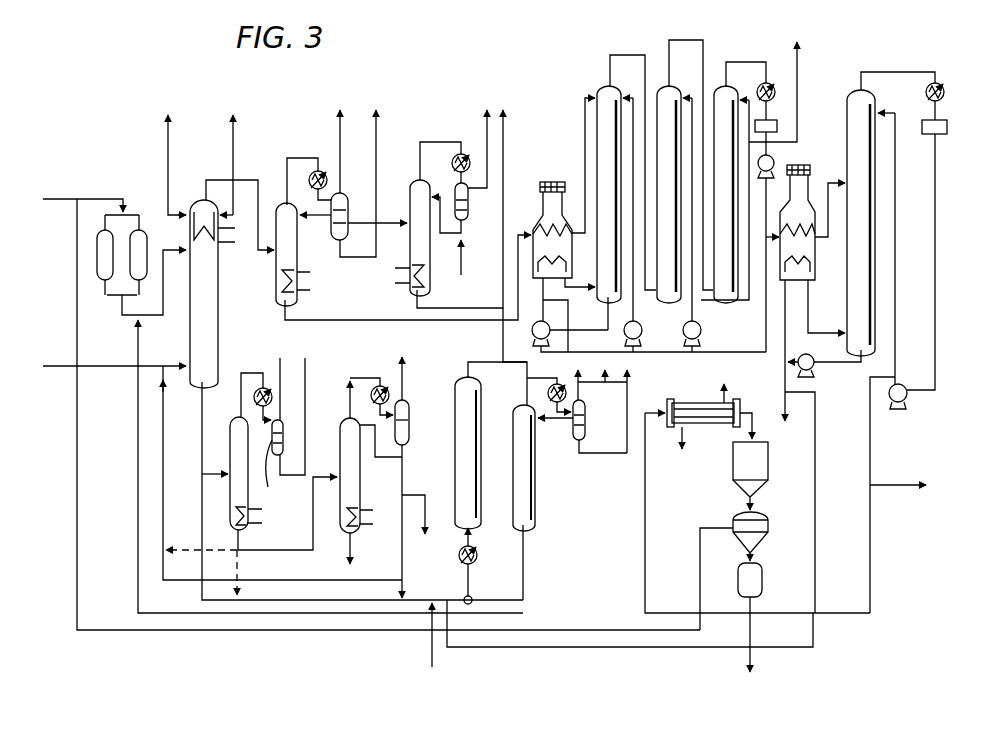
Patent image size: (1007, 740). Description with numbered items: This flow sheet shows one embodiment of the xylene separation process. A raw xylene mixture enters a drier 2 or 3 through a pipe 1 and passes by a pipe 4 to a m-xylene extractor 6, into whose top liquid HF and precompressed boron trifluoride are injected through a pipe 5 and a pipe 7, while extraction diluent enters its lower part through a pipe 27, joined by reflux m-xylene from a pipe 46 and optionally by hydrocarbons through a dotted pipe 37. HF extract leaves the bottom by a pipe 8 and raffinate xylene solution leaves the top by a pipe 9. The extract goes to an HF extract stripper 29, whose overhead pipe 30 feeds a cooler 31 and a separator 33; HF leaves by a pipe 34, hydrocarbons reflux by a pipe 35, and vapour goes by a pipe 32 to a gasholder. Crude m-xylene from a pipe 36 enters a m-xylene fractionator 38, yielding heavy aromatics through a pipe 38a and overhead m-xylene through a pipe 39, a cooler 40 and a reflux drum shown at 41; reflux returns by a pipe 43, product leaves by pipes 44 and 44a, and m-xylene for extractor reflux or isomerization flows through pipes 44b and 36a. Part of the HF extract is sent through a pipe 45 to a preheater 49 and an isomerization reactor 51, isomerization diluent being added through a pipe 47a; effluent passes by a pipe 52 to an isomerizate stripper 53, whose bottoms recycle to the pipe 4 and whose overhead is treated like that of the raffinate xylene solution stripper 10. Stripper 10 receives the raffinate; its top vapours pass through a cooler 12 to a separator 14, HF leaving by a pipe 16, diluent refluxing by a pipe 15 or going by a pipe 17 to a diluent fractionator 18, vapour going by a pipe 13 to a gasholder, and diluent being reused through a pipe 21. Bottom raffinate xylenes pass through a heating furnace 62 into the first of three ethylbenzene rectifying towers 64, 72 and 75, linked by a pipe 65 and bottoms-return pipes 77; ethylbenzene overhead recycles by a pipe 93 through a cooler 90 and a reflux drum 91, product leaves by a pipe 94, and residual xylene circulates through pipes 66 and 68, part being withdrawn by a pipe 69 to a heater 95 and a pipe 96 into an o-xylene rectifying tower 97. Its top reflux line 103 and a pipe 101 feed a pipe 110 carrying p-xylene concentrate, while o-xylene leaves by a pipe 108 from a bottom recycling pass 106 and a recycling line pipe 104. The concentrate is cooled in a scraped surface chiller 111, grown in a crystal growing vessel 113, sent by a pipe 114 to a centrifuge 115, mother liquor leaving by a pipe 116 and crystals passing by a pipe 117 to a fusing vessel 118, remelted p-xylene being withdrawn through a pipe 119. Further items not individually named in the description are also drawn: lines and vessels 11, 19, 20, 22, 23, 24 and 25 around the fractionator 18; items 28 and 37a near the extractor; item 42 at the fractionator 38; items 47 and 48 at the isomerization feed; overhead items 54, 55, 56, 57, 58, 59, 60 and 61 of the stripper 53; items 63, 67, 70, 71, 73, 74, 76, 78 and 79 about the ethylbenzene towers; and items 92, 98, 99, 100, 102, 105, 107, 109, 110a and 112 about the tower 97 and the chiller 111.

The pipe 1 is at (104, 199).
The drier 2 is at (104, 283).
The drier 3 is at (146, 243).
The pipe 4 is at (146, 312).
The pipe 5 is at (167, 150).
The m-xylene extractor 6 is at (218, 290).
The pipe 7 is at (232, 148).
The pipe 8 is at (202, 400).
The raffinate xylene-solution withdrawal pipe 9 is at (258, 178).
The raffinate xylene solution stripper 10 is at (276, 263).
The overhead line 11 is at (288, 165).
The cooler 12 is at (318, 170).
The pipe 13 is at (340, 118).
The separator 14 is at (348, 198).
The pipe 15 is at (316, 218).
The pipe 16 is at (355, 257).
The pipe 17 is at (390, 222).
The diluent fractionator 18 is at (410, 257).
The overhead line 19 is at (440, 142).
The condenser 20 is at (462, 152).
The pipe 21 is at (488, 112).
The separator drum 22 is at (468, 212).
The line 23 is at (504, 158).
The reflux line 24 is at (452, 238).
The line 25 is at (463, 268).
The pipe 27 is at (107, 366).
The line 28 is at (202, 474).
The HF extract stripper 29 is at (230, 428).
The pipe 30 is at (242, 380).
The cooler 31 is at (280, 370).
The pipe 32 is at (305, 366).
The separator 33 is at (283, 430).
The pipe 34 is at (292, 476).
The pipe 35 is at (268, 487).
The pipe 36 is at (250, 548).
The pipe 36a is at (240, 568).
The pipe 37 is at (195, 550).
The line 37a is at (163, 450).
The m-xylene fractionator 38 is at (342, 448).
The pipe 38a is at (352, 555).
The pipe 39 is at (349, 382).
The cooler 40 is at (380, 385).
The separator 41 is at (409, 405).
The vent line 42 is at (404, 365).
The pipe 43 is at (375, 460).
The pipe 44 is at (404, 470).
The pipe 44a is at (425, 494).
The pipe 44b is at (402, 540).
The pipe 45 is at (202, 493).
The pipe 46 is at (313, 583).
The line 47 is at (436, 585).
The pipe 47a is at (432, 660).
The valve 48 is at (473, 600).
The preheater 49 is at (478, 560).
The isomerization reactor 51 is at (456, 428).
The pipe 52 is at (478, 362).
The isomerizate stripper 53 is at (535, 500).
The line 54 is at (528, 380).
The heat exchanger 55 is at (558, 384).
The line 56 is at (605, 382).
The separator 57 is at (585, 428).
The line 58 is at (627, 398).
The line 59 is at (560, 430).
The line 60 is at (606, 454).
The line 61 is at (524, 545).
The heating furnace 62 is at (553, 200).
The line 63 is at (584, 100).
The ethylbenzene rectifying tower 64 is at (602, 150).
The pipe 65 is at (610, 60).
The pipe 66 is at (570, 305).
The pump 67 is at (532, 330).
The pipe 68 is at (518, 300).
The pipe 69 is at (548, 322).
The pump 70 is at (636, 322).
The line 71 is at (672, 355).
The second tower 72 is at (690, 50).
The reactor 73 is at (668, 88).
The line 74 is at (650, 343).
The third tower 75 is at (735, 62).
The reactor 76 is at (724, 92).
The pipes 77 is at (702, 330).
The line 78 is at (698, 348).
The line 79 is at (750, 300).
The cooler 90 is at (766, 82).
The reflux drum 91 is at (778, 125).
The pump 92 is at (775, 160).
The pipe 93 is at (766, 185).
The pipe 94 is at (797, 72).
The heater 95 is at (808, 262).
The pipe 96 is at (828, 192).
The o-xylene rectifying tower 97 is at (866, 240).
The overhead line 98 is at (888, 72).
The condenser 99 is at (935, 82).
The separator 100 is at (946, 132).
The pipe 101 is at (935, 310).
The pump 102 is at (905, 404).
The top reflux line 103 is at (895, 185).
The recycling line pipe 104 is at (812, 372).
The line 105 is at (786, 364).
The bottom recycling pass 106 is at (772, 237).
The line 107 is at (820, 332).
The pipe 108 is at (788, 405).
The line 109 is at (815, 470).
The pipe 110 is at (871, 445).
The line 110a is at (910, 488).
The scraped surface chiller 111 is at (692, 427).
The line 112 is at (760, 404).
The crystal growing vessel 113 is at (733, 468).
The pipe 114 is at (754, 492).
The centrifuge 115 is at (735, 525).
The pipe 116 is at (700, 548).
The pipe 117 is at (756, 550).
The fusing vessel 118 is at (762, 582).
The pipe 119 is at (752, 662).